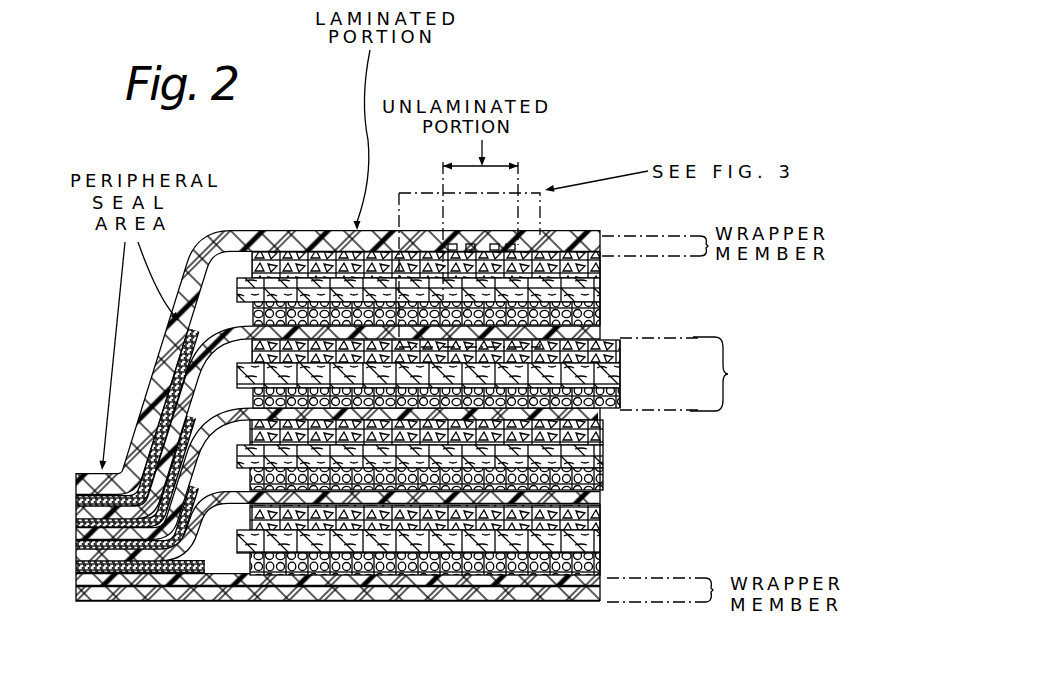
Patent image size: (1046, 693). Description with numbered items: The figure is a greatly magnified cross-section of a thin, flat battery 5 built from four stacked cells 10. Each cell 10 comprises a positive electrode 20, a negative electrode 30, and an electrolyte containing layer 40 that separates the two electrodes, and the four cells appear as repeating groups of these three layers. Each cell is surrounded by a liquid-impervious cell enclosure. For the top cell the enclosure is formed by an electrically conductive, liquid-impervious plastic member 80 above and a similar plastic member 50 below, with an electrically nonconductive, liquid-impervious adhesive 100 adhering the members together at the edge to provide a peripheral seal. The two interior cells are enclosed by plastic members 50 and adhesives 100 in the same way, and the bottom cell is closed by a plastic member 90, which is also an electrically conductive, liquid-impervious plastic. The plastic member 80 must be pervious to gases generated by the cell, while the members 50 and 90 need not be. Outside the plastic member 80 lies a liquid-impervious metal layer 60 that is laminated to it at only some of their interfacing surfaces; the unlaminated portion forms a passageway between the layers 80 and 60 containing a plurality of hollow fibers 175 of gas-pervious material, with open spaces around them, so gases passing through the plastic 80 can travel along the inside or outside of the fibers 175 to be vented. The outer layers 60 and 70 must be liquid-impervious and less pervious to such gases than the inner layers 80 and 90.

The battery 5 is at (322, 228).
The cell 10 is at (691, 374).
The positive electrode 20 is at (600, 268).
The negative electrode 30 is at (598, 311).
The electrolyte containing layer 40 is at (600, 291).
The plastic member 50 is at (600, 333).
The metal layer 60 is at (590, 237).
The outer layer 70 is at (599, 600).
The plastic member 80 is at (604, 250).
The plastic member 90 is at (603, 583).
The adhesive 100 is at (80, 568).
The hollow fibers 175 is at (486, 243).